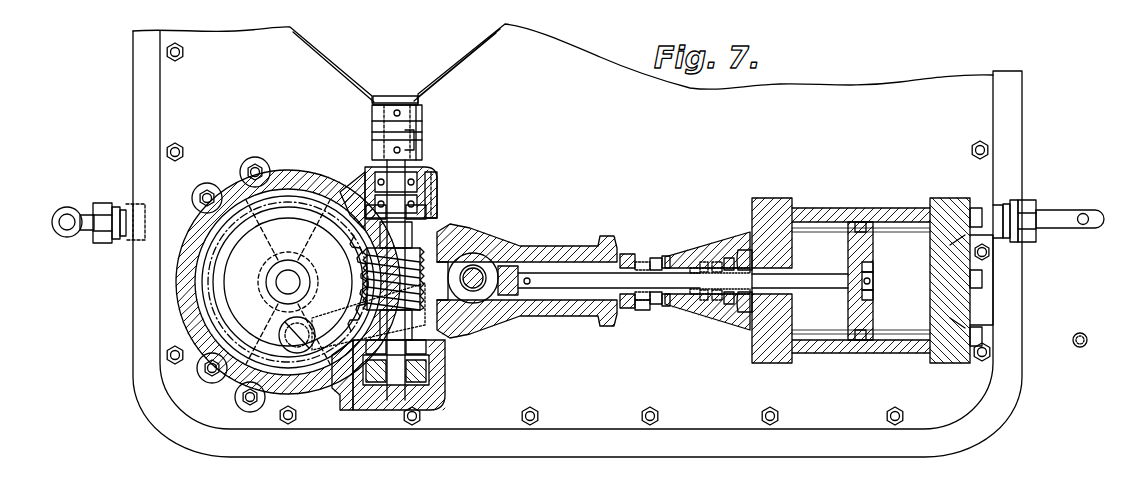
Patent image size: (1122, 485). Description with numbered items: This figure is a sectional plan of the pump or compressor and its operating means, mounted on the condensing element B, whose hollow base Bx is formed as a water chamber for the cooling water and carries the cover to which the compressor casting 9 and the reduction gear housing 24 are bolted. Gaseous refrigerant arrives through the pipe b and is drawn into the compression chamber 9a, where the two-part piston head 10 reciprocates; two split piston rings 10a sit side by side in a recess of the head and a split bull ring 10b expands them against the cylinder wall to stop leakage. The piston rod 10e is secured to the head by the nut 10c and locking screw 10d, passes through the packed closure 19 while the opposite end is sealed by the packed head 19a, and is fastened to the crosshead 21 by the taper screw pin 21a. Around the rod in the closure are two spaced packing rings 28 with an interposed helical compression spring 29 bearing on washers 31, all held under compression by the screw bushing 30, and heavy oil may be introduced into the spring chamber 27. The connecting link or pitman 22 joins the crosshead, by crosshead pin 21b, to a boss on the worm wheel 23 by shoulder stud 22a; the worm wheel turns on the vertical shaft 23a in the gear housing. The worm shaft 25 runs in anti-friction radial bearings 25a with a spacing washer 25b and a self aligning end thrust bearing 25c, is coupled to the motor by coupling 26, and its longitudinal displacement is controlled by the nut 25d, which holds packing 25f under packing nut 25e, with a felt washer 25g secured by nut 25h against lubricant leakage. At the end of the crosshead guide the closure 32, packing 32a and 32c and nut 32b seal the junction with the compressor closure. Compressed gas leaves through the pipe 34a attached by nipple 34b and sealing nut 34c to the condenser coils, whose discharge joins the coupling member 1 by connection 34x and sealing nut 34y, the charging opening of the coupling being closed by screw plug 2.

The condenser B is at (577, 240).
The base of the condenser Bx is at (170, 116).
The pipe b is at (1073, 348).
The coupling member 1 is at (66, 208).
The screw plug 2 is at (58, 235).
The connection 34x is at (114, 207).
The sealing nut 34y is at (104, 245).
The compressor 9 is at (872, 210).
The compression chamber 9a is at (901, 281).
The piston head 10 is at (846, 262).
The split piston rings 10a is at (868, 342).
The split bull ring 10b is at (874, 296).
The nut 10c is at (876, 265).
The locking screw 10d is at (875, 283).
The piston rod 10e is at (830, 290).
The closure 19 is at (712, 252).
The head 19a is at (952, 290).
The crosshead 21 is at (526, 262).
The taper screw pin 21a is at (527, 290).
The crosshead pin 21b is at (480, 264).
The connecting link or pitman 22 is at (438, 303).
The shoulder stud 22a is at (312, 322).
The worm wheel 23 is at (332, 238).
The vertical shaft 23a is at (278, 283).
The reduction gear housing 24 is at (296, 178).
The worm shaft 25 is at (380, 238).
The anti-friction radial bearings 25a is at (437, 208).
The spacing washer 25b is at (440, 374).
The anti-friction self aligning end thrust bearing 25c is at (440, 393).
The nut 25d is at (424, 172).
The packing nut 25e is at (374, 172).
The packing 25f is at (368, 182).
The felt washer 25g is at (437, 190).
The nut 25h is at (422, 153).
The coupling 26 is at (418, 135).
The spring chamber 27 is at (744, 248).
The packing rings 28 is at (700, 298).
The helical compression spring 29 is at (720, 302).
The screw bushing 30 is at (656, 258).
The rings or washers 31 is at (770, 254).
The closure 32 is at (640, 300).
The packing 32a is at (668, 256).
The nut 32b is at (632, 310).
The packing 32c is at (622, 254).
The pipe 34a is at (1076, 212).
The nipple 34b is at (1012, 204).
The sealing nut 34c is at (1032, 240).